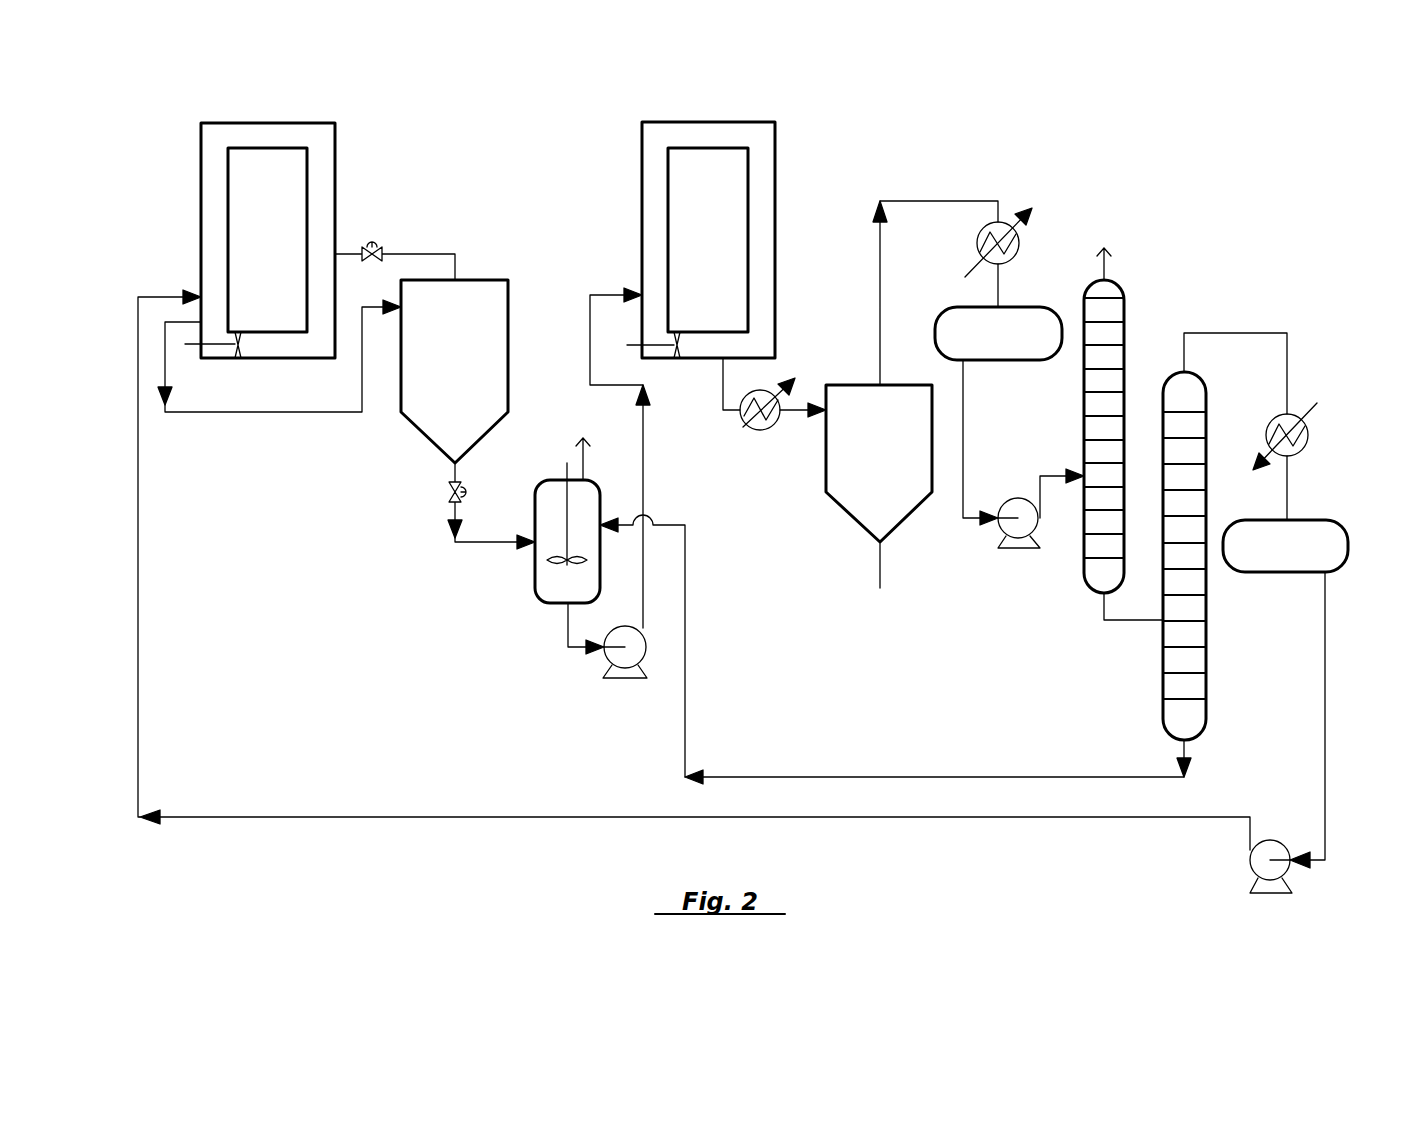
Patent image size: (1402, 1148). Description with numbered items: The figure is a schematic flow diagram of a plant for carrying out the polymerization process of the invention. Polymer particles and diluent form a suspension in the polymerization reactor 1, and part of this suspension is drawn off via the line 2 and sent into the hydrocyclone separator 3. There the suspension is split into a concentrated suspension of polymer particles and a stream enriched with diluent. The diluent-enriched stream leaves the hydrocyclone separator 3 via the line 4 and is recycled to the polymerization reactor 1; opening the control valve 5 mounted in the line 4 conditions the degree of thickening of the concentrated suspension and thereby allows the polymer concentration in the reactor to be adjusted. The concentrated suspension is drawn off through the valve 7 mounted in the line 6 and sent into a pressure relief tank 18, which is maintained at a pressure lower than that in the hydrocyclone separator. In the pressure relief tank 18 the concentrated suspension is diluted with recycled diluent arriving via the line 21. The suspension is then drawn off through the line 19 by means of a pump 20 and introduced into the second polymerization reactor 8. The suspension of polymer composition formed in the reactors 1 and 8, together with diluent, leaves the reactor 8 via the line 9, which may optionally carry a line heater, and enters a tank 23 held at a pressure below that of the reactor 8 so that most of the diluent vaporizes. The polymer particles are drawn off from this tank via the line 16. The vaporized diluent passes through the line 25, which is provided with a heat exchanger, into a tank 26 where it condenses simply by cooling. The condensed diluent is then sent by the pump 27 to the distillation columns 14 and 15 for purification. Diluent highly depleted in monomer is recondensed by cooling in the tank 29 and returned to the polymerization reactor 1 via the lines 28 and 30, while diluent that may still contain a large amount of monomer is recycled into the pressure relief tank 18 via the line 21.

The polymerization reactor 1 is at (215, 160).
The line 2 is at (187, 413).
The hydrocyclone separator 3 is at (480, 330).
The line 4 is at (456, 270).
The control valve 5 is at (372, 236).
The line 6 is at (488, 542).
The valve 7 is at (446, 487).
The polymerization reactor 8 is at (762, 158).
The line 9 is at (723, 400).
The distillation column 14 is at (1105, 312).
The distillation column 15 is at (1183, 660).
The line 16 is at (880, 568).
The pressure relief tank 18 is at (552, 490).
The line 19 is at (647, 477).
The pump 20 is at (615, 652).
The line 21 is at (935, 777).
The tank 23 is at (850, 397).
The line 25 is at (930, 201).
The tank 26 is at (1026, 332).
The pump 27 is at (1018, 528).
The line 28 is at (1325, 674).
The tank 29 is at (1313, 543).
The line 30 is at (140, 660).